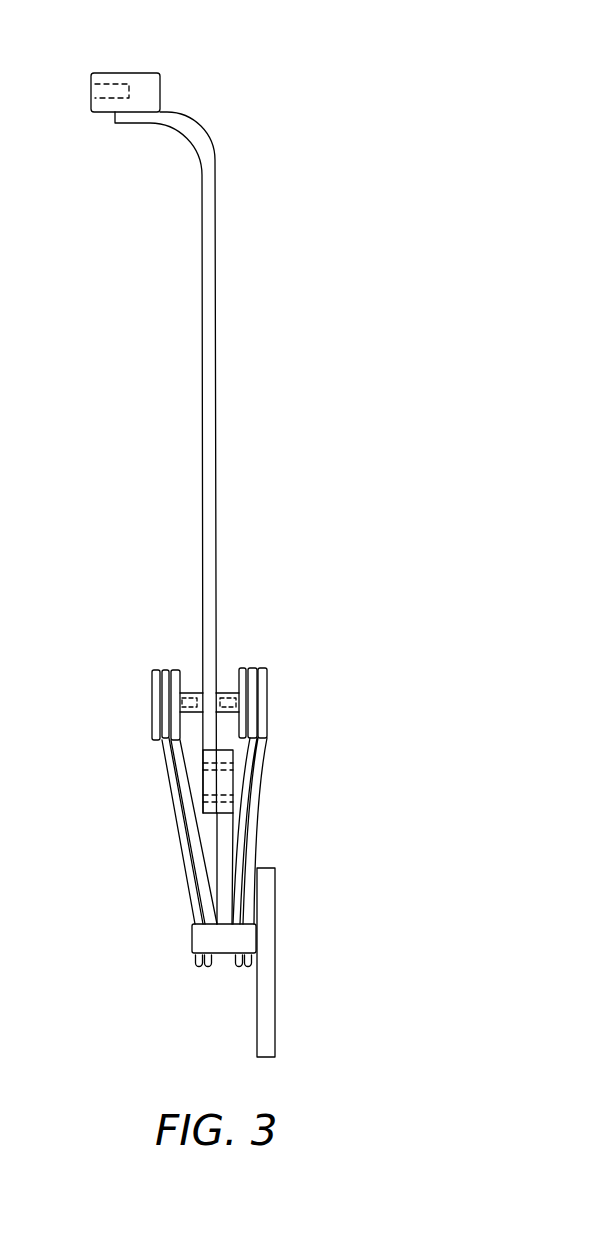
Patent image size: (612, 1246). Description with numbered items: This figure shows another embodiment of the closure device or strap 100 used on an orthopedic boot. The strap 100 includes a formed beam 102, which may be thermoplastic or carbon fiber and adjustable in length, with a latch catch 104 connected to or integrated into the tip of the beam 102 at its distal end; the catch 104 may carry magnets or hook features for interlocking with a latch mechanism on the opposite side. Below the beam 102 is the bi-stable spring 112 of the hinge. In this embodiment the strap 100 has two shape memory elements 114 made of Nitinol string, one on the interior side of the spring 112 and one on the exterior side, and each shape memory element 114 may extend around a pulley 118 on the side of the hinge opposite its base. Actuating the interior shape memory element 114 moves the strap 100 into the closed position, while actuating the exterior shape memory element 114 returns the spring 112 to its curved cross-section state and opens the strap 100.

The closure device or strap 100 is at (258, 180).
The formed beam 102 is at (201, 293).
The latch catch 104 is at (107, 73).
The spring 112 is at (227, 840).
The shape memory element 114 is at (178, 818).
The pulley 118 is at (155, 672).